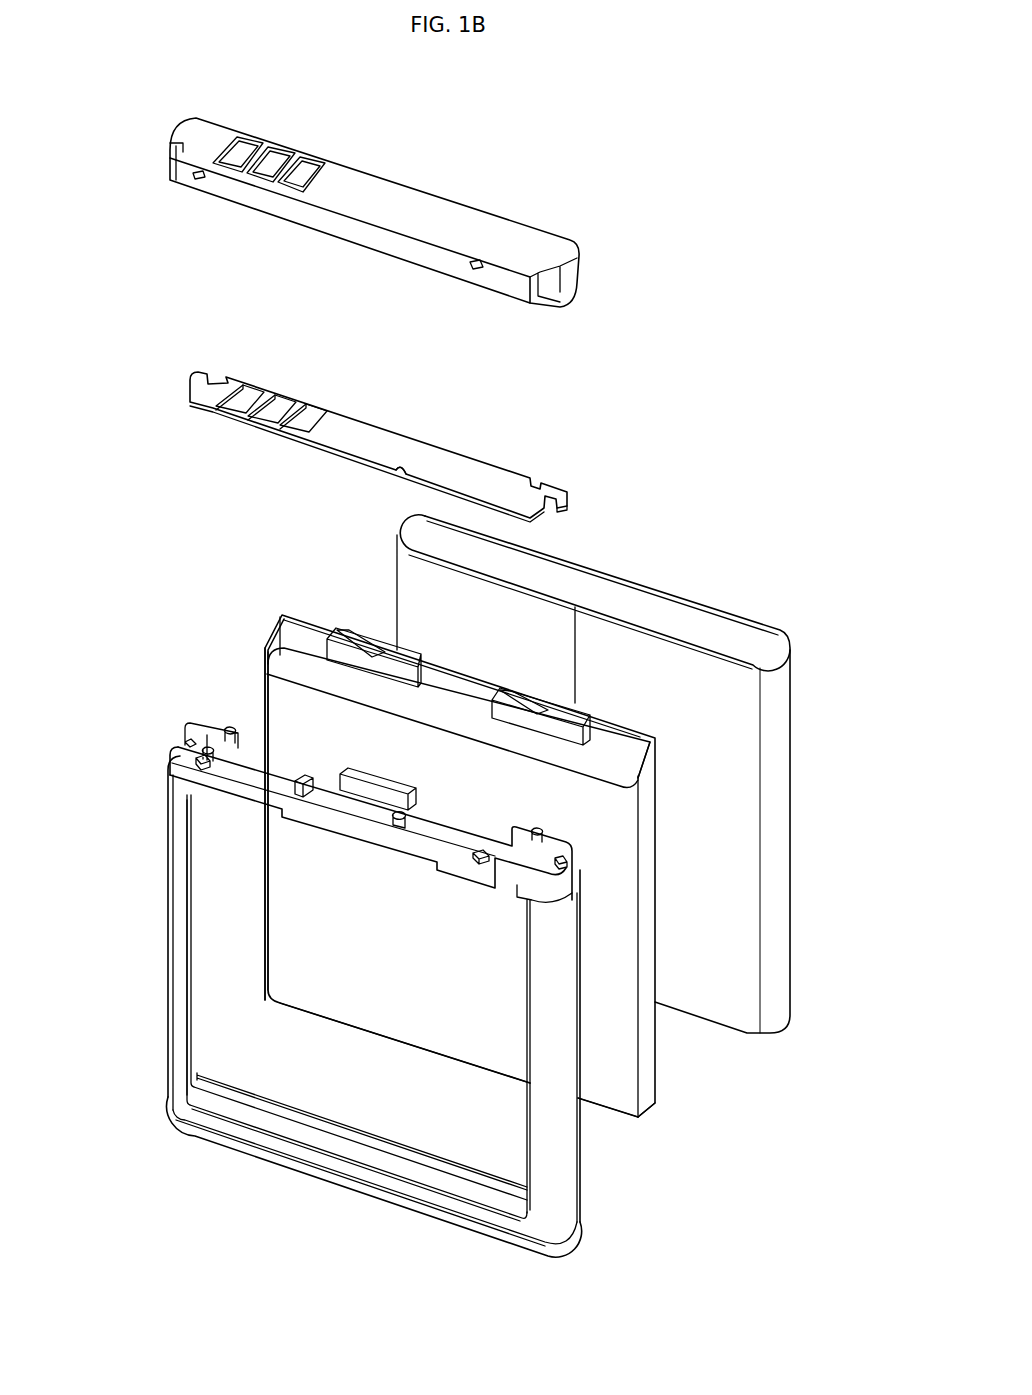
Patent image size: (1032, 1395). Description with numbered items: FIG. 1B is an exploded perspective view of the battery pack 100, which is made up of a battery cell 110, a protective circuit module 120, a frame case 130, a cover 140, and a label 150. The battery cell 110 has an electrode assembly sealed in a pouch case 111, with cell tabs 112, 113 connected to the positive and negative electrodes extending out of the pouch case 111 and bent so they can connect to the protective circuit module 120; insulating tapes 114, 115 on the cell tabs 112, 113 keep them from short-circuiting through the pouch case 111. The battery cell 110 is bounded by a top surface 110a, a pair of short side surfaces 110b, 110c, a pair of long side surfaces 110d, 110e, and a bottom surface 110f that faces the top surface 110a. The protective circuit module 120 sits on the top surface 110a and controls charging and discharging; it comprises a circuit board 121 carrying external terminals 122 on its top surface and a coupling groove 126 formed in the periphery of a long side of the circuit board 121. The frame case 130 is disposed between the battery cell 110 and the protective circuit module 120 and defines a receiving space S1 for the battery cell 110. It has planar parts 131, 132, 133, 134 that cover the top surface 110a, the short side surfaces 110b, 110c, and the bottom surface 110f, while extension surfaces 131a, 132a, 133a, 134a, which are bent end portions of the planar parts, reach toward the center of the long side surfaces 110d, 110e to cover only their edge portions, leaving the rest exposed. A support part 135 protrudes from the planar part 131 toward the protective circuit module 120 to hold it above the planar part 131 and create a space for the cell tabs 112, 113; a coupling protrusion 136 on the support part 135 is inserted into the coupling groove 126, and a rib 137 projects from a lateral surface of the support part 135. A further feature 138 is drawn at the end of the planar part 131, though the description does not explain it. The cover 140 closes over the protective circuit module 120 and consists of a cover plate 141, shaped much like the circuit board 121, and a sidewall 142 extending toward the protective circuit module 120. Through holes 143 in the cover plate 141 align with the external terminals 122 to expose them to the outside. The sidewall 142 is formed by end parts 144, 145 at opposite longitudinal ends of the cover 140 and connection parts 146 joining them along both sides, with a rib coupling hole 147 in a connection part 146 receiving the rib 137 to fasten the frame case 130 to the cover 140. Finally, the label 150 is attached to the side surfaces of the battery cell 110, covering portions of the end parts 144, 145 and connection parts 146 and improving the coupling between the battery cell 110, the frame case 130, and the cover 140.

The battery pack 100 is at (763, 170).
The battery cell 110 is at (263, 630).
The top surface 110a is at (305, 650).
The short side surface 110b is at (650, 901).
The short side surface 110c is at (264, 688).
The long side surface 110d is at (603, 1103).
The long side surface 110e is at (657, 1055).
The bottom surface 110f is at (400, 1045).
The pouch case 111 is at (628, 725).
The cell tab 112 is at (340, 630).
The cell tab 113 is at (510, 690).
The insulating tape 114 is at (405, 660).
The insulating tape 115 is at (530, 700).
The protective circuit module 120 is at (190, 379).
The circuit board 121 is at (345, 423).
The external terminals 122 is at (252, 393).
The coupling groove 126 is at (400, 468).
The frame case 130 is at (170, 740).
The planar part 131 is at (285, 770).
The extension surface 131a is at (362, 838).
The planar part 132 is at (568, 1175).
The extension surface 132a is at (530, 1142).
The planar part 133 is at (167, 908).
The extension surface 133a is at (176, 990).
The planar part 134 is at (410, 1208).
The extension surface 134a is at (292, 1148).
The support part 135 is at (312, 776).
The coupling protrusion 136 is at (407, 807).
The rib 137 is at (474, 851).
The coupling portion 138 is at (217, 788).
The cover 140 is at (582, 212).
The cover plate 141 is at (400, 192).
The sidewall 142 is at (214, 262).
The through holes 143 is at (283, 150).
The end part 144 is at (573, 307).
The end part 145 is at (183, 181).
The connection parts 146 is at (322, 226).
The rib coupling hole 147 is at (470, 265).
The label 150 is at (745, 610).
The receiving space S1 is at (258, 1068).